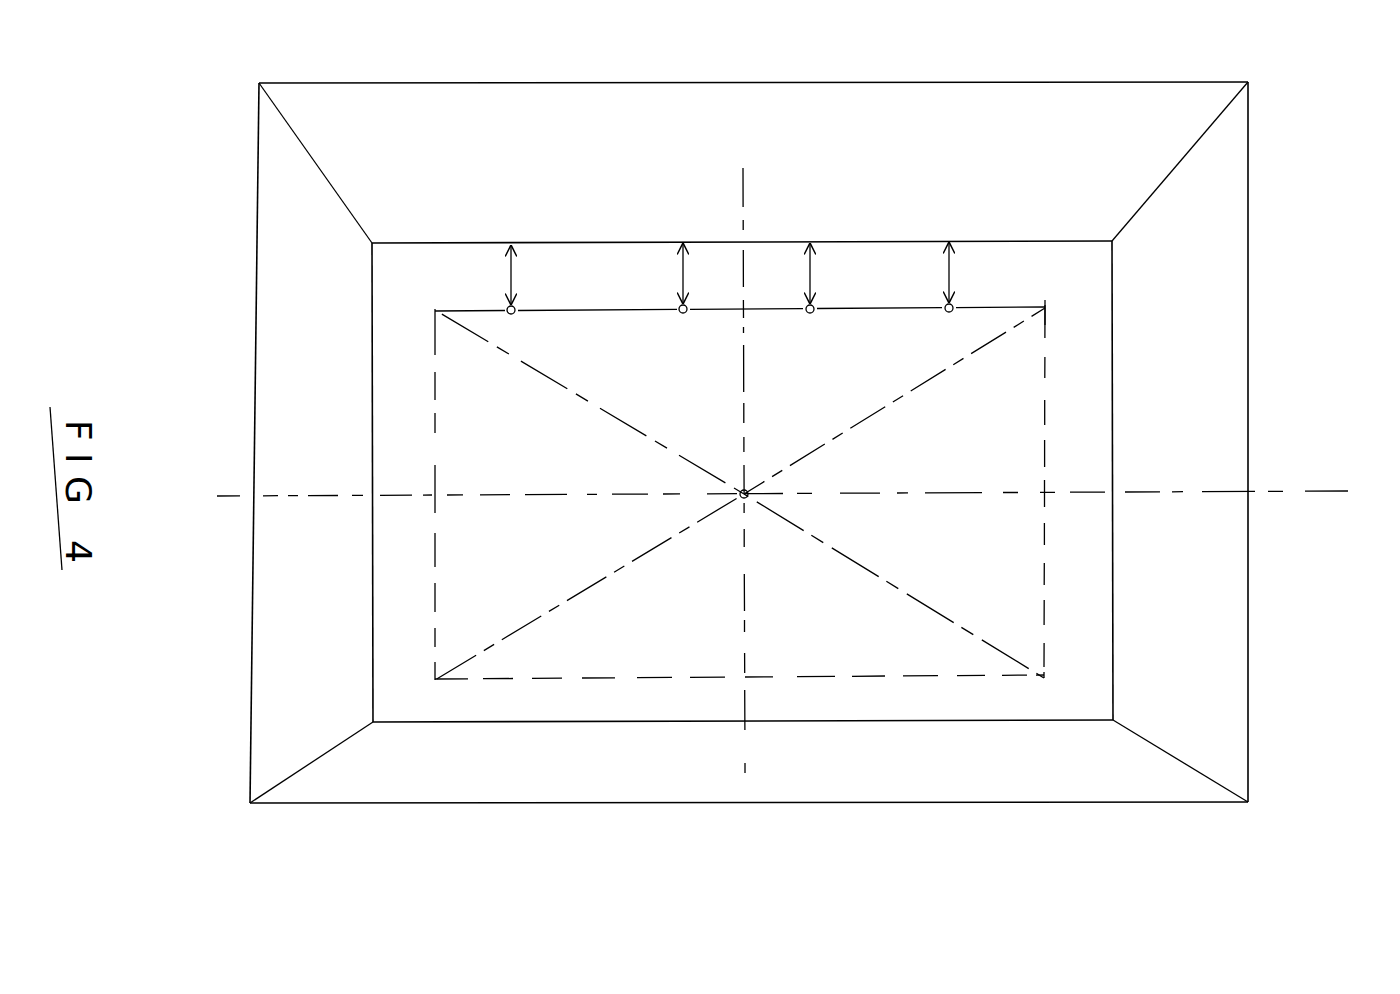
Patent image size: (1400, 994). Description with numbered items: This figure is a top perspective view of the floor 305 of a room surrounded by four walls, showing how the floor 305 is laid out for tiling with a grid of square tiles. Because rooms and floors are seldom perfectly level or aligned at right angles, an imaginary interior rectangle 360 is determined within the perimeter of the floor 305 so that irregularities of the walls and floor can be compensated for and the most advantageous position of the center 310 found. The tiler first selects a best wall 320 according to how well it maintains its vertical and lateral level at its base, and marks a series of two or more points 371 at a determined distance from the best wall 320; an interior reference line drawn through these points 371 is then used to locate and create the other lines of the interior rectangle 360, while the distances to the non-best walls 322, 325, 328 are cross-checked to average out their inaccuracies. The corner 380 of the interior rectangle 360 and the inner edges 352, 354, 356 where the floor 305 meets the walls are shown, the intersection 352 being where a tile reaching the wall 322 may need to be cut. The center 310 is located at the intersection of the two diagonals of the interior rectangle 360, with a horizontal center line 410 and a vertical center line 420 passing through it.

The floor 305 is at (920, 404).
The center 310 is at (509, 276).
The best wall 320 is at (756, 154).
The non-best wall 322 is at (316, 476).
The non-best wall 325 is at (736, 774).
The non-best wall 328 is at (1206, 442).
The intersection 352 is at (372, 370).
The top and bottom inner edges 354 is at (990, 241).
The right inner edge 356 is at (1113, 550).
The interior rectangle 360 is at (438, 514).
The points 371 is at (496, 326).
The corner of display region 380 is at (984, 306).
The horizontal center line 410 is at (1316, 489).
The vertical center line 420 is at (745, 187).